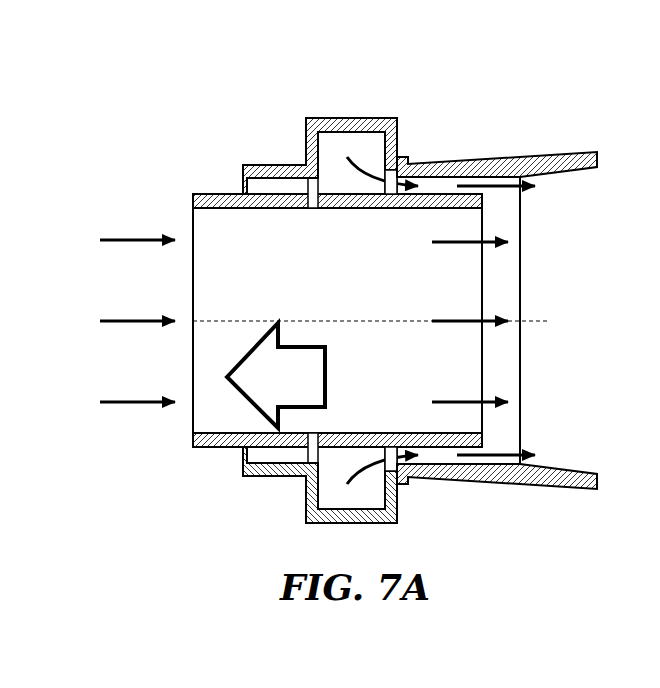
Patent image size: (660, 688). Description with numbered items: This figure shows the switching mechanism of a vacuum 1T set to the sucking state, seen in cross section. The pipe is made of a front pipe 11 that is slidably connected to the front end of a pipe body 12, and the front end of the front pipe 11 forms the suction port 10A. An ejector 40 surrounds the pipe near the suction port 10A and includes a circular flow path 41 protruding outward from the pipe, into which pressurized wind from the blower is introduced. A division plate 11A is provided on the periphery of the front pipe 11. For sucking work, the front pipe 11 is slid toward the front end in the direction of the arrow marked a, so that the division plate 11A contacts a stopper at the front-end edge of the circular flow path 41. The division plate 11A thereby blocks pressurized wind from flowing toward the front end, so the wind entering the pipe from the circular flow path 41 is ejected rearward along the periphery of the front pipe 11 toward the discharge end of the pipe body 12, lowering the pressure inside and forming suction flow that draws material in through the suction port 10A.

The vacuum 1T is at (516, 80).
The suction port 10A is at (193, 426).
The front pipe 11 is at (207, 192).
The division plate 11A is at (323, 188).
The pipe body 12 is at (562, 154).
The ejector 40 is at (321, 110).
The circular flow path 41 is at (377, 140).